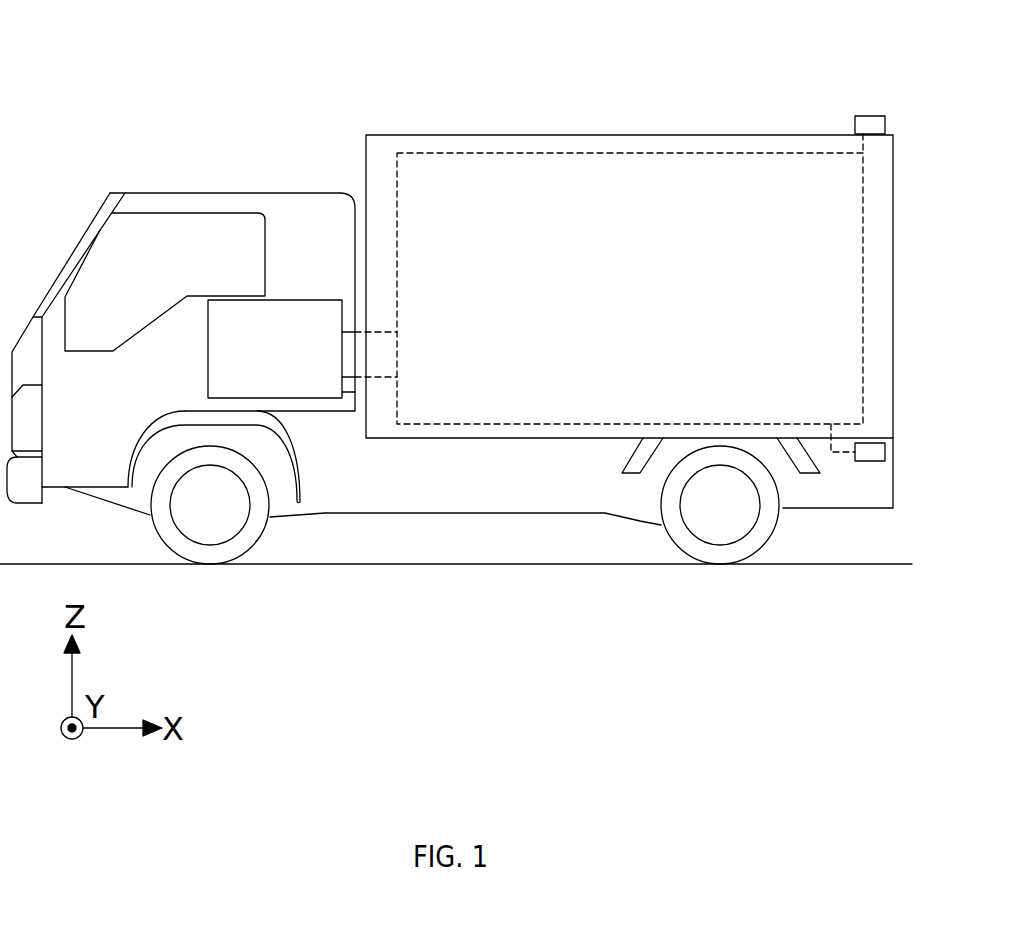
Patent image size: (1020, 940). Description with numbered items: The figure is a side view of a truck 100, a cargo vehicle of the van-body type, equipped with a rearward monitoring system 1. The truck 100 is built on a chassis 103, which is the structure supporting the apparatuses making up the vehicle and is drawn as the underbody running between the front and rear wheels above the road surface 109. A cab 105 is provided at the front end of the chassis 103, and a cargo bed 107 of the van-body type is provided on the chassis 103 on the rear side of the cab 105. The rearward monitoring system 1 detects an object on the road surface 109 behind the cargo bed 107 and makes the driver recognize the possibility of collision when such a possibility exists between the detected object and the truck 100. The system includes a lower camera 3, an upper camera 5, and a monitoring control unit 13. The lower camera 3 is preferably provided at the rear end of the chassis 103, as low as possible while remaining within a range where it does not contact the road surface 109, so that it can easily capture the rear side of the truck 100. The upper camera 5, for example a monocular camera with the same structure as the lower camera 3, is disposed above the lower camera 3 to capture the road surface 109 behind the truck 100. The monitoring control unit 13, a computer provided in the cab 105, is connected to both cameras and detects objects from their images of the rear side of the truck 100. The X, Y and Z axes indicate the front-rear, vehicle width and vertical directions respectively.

The truck 100 is at (130, 39).
The rearward monitoring system 1 is at (656, 125).
The lower camera 3 is at (868, 461).
The upper camera 5 is at (865, 116).
The monitoring control unit 13 is at (310, 300).
The chassis 103 is at (458, 502).
The cab 105 is at (183, 192).
The cargo bed 107 is at (550, 135).
The road surface 109 is at (598, 565).